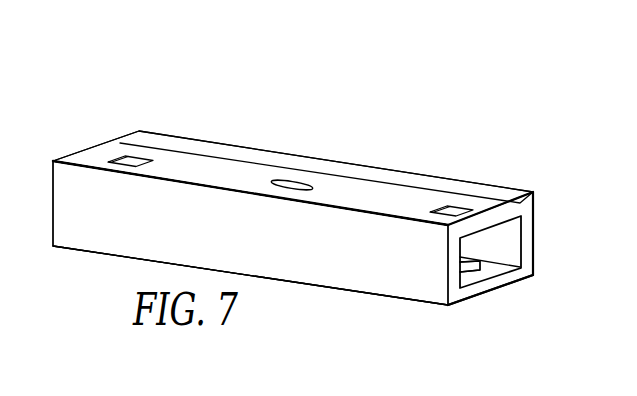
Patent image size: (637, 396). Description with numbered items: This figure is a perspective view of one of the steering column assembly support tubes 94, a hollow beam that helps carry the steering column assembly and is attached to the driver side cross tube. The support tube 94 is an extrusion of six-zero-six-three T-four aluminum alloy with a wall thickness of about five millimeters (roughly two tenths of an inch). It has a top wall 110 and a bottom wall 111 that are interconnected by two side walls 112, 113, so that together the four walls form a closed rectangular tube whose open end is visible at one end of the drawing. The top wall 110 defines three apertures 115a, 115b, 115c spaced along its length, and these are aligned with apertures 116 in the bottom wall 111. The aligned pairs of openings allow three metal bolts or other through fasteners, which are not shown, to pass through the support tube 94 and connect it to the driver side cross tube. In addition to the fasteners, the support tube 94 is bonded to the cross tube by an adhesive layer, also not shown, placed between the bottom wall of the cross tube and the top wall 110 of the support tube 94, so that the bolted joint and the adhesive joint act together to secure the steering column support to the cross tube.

The steering column assembly support tube 94 is at (386, 106).
The top wall 110 is at (503, 205).
The bottom wall 111 is at (475, 292).
The side wall 112 is at (361, 273).
The side wall 113 is at (533, 237).
The aperture 115a is at (447, 207).
The aperture 115b is at (292, 183).
The aperture 115c is at (128, 160).
The apertures 116 is at (481, 268).